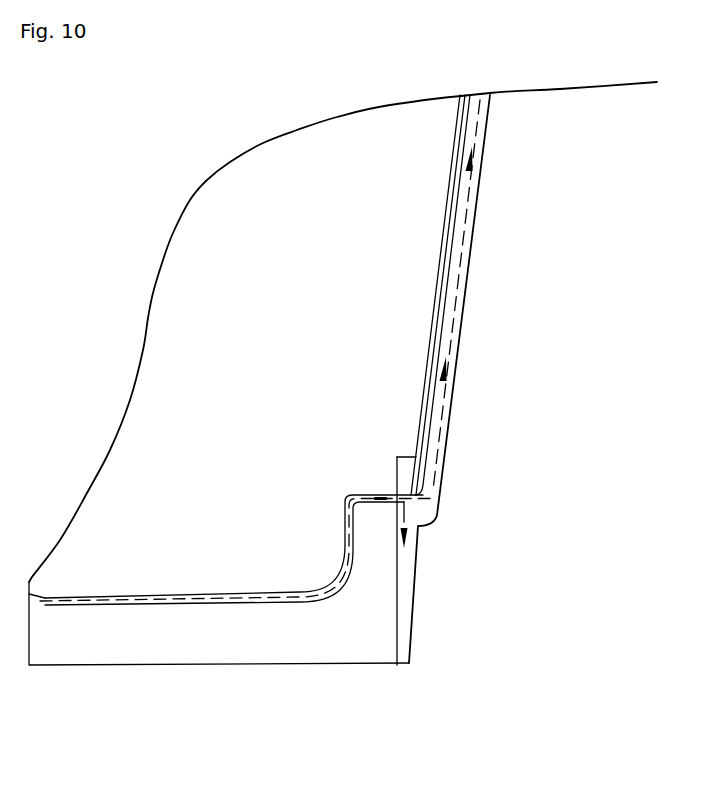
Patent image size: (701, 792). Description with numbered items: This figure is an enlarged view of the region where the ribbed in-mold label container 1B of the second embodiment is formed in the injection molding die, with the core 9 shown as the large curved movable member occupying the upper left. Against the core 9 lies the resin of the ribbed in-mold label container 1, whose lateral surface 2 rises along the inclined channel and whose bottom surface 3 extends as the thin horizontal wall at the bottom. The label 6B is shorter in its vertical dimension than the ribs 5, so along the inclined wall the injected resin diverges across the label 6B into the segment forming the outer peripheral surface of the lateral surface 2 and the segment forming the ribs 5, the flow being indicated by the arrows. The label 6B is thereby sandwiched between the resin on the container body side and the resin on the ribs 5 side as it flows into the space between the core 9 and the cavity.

The core 9 is at (173, 303).
The rib 5 is at (482, 159).
The label 6B is at (443, 303).
The ribbed in-mold label container 1B is at (498, 379).
The bottom surface 3 is at (195, 608).
The ribbed in-mold label container 1 is at (219, 595).
The lateral surface 2 is at (283, 632).